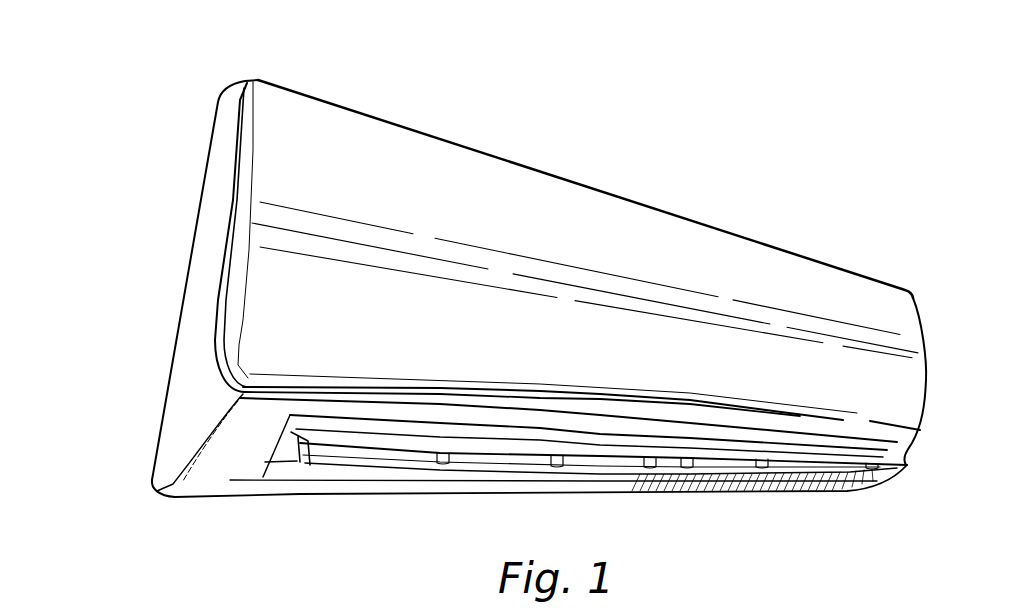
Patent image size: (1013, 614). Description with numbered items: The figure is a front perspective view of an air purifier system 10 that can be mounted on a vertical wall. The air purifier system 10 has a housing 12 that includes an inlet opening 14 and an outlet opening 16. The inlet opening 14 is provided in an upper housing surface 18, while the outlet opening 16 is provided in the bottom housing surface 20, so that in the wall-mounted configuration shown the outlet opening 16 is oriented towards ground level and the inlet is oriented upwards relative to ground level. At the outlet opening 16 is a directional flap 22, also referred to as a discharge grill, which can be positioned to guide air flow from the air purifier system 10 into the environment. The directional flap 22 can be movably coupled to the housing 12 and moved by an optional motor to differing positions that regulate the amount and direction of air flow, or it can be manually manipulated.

The air purifier system 10 is at (147, 112).
The housing 12 is at (867, 295).
The inlet opening 14 is at (643, 200).
The outlet opening 16 is at (300, 467).
The upper housing surface 18 is at (395, 133).
The bottom housing surface 20 is at (215, 496).
The directional flap 22 is at (368, 443).